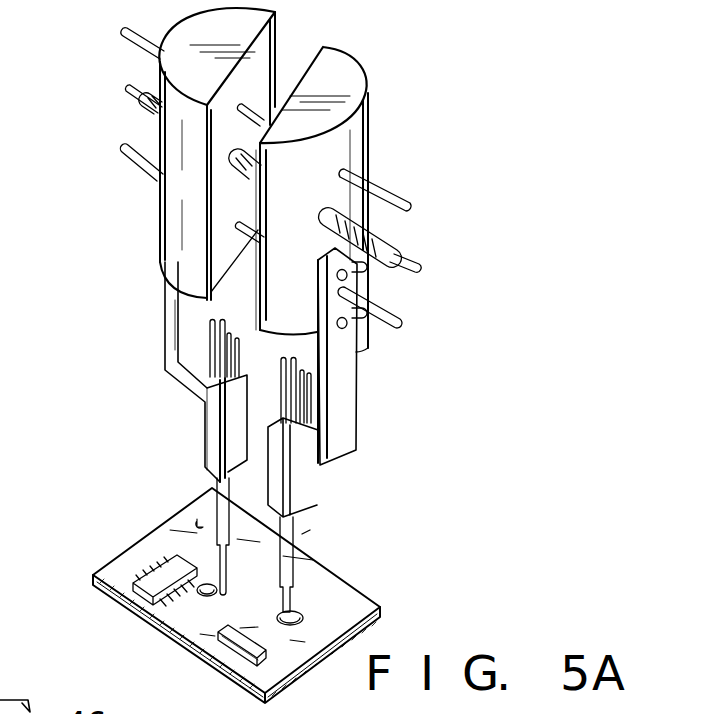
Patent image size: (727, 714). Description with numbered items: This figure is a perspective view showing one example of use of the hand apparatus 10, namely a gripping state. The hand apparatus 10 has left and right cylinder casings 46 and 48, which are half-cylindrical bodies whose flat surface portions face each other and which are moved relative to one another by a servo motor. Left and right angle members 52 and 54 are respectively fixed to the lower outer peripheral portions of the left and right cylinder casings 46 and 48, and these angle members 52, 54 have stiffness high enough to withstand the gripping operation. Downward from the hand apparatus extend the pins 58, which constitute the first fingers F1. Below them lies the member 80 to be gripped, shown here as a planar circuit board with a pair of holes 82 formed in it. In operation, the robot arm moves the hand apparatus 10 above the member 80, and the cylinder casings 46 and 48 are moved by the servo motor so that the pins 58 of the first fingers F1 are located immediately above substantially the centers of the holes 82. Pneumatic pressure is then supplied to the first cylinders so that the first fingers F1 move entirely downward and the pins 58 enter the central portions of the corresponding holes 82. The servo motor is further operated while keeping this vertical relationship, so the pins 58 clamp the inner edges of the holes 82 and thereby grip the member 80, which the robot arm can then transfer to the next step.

The hand apparatus 10 is at (266, 180).
The left cylinder casing 46 is at (167, 219).
The right cylinder casing 48 is at (362, 148).
The left angle member 52 is at (178, 383).
The right angle member 54 is at (345, 428).
The pin 58 is at (300, 596).
The first finger F1 is at (299, 536).
The member to be gripped 80 is at (146, 556).
The hole 82 is at (206, 592).